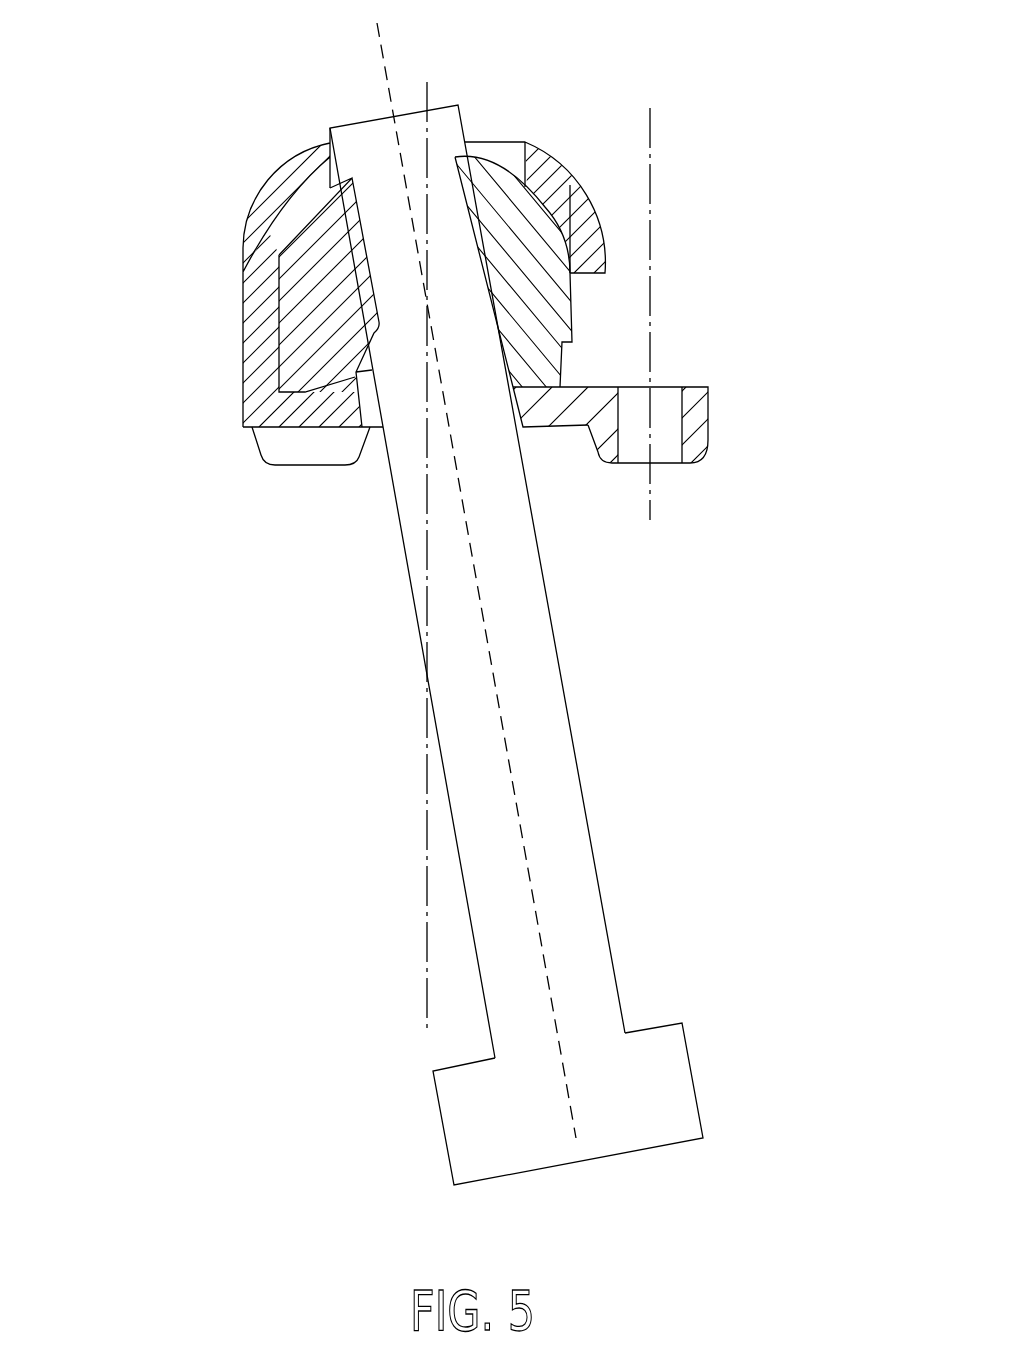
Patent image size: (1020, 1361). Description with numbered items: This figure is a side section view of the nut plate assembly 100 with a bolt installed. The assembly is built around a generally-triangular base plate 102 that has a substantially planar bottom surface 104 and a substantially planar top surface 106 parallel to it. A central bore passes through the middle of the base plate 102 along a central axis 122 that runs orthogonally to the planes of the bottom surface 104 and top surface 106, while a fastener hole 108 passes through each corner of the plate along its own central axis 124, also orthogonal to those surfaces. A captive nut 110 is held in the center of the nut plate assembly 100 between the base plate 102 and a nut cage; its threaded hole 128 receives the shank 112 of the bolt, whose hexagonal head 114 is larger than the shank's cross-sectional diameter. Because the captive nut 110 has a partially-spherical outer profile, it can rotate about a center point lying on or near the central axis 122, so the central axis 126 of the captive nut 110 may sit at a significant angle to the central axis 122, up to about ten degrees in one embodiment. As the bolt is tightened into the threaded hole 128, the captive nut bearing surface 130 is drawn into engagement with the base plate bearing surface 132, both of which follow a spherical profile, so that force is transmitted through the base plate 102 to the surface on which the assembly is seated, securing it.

The nut plate assembly 100 is at (166, 161).
The base plate 102 is at (243, 388).
The bottom surface 104 is at (573, 428).
The top surface 106 is at (600, 387).
The fastener hole 108 is at (665, 463).
The captive nut 110 is at (300, 290).
The shank 112 is at (560, 780).
The head 114 is at (648, 1027).
The central axis 122 is at (427, 84).
The central axis 124 is at (652, 152).
The central axis 126 is at (380, 42).
The threaded hole 128 is at (456, 160).
The captive nut bearing surface 130 is at (317, 428).
The base plate bearing surface 132 is at (328, 428).